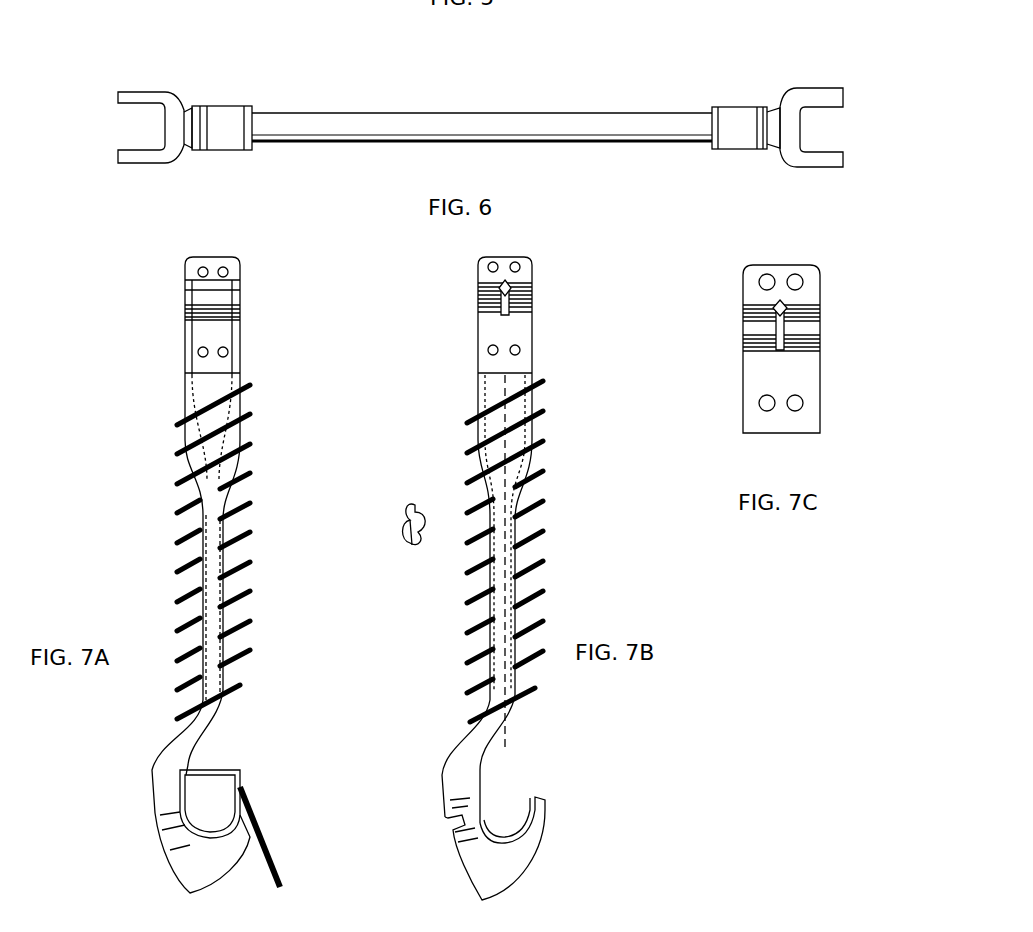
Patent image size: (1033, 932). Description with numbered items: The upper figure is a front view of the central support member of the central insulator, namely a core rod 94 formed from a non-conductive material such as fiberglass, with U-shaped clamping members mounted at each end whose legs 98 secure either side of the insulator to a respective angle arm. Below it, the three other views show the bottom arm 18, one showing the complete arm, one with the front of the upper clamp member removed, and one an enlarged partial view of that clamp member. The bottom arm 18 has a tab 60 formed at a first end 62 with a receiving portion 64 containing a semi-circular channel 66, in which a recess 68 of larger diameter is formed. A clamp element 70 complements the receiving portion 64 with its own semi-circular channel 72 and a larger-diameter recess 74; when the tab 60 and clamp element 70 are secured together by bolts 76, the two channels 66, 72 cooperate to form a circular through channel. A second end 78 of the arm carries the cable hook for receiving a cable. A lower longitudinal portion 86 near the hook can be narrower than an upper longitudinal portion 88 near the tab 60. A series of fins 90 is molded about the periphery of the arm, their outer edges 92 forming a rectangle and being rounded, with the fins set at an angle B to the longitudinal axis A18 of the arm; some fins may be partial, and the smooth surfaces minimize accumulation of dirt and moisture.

In FIG. 6, the core rod 94 is at (695, 115).
In FIG. 6, the legs 98 is at (845, 152).
In FIG. 7A, the receiving portion 64 is at (224, 326).
In FIG. 7A, the tab 60 is at (238, 325).
In FIG. 7A, the bolts 76 is at (203, 352).
In FIG. 7A, the bottom arm 18 is at (209, 552).
In FIG. 7A, the first end 62 is at (246, 373).
In FIG. 7A, the upper longitudinal portion 88 is at (215, 445).
In FIG. 7A, the fins 90 is at (233, 512).
In FIG. 7A, the outer edges 92 is at (250, 535).
In FIG. 7A, the lower longitudinal portion 86 is at (213, 627).
In FIG. 7A, the second end 78 is at (228, 683).
In FIG. 7B, the recess 68 is at (500, 298).
In FIG. 7B, the semi-circular channel 66 is at (525, 305).
In FIG. 7B, the longitudinal axis A18 is at (510, 732).
In FIG. 7B, the angle β B is at (470, 498).
In FIG. 7C, the recess 74 is at (775, 320).
In FIG. 7C, the clamp element 70 is at (822, 290).
In FIG. 7C, the semi-circular channel 72 is at (805, 335).